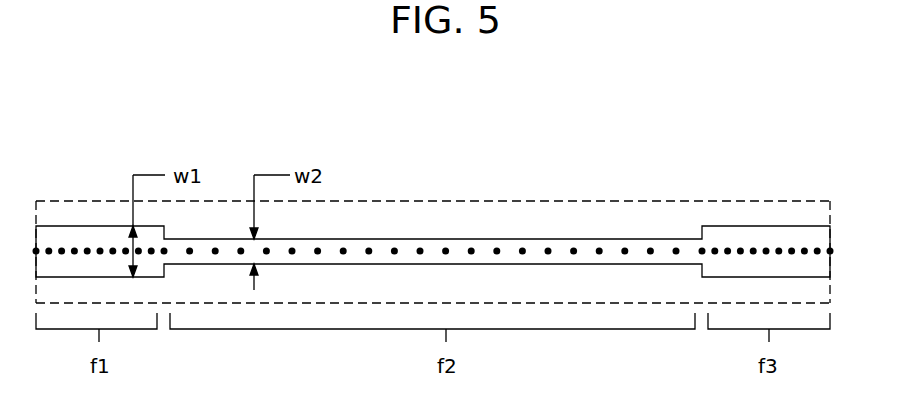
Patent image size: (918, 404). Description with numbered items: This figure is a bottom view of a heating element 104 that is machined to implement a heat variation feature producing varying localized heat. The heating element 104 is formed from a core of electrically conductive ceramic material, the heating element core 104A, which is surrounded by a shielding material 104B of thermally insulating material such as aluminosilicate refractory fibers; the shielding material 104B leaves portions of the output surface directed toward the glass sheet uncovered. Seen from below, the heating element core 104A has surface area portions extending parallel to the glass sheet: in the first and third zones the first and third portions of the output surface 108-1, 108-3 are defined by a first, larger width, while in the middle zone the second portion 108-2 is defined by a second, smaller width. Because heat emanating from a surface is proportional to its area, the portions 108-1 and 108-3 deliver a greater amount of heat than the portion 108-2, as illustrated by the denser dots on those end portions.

The heating element 104 is at (465, 96).
The heating element core 104A is at (560, 265).
The shielding material 104B is at (444, 210).
The first portion of the output surface 108-1 is at (60, 236).
The second portion of the output surface 108-2 is at (355, 248).
The third portion of the output surface 108-3 is at (714, 235).